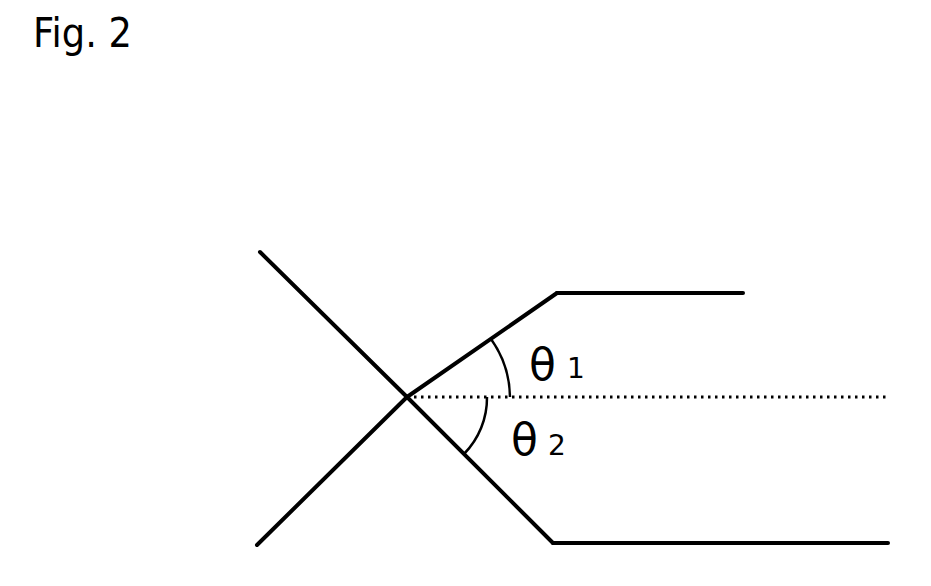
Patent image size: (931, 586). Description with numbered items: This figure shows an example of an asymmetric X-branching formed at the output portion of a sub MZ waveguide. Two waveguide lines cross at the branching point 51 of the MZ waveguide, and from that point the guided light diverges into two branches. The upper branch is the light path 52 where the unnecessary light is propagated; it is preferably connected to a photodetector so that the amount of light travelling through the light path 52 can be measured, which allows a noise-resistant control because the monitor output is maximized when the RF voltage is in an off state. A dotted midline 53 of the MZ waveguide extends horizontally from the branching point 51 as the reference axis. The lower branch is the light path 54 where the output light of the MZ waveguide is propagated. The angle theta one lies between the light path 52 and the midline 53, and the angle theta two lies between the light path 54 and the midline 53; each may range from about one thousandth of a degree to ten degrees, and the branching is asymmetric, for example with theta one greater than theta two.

The branching point 51 is at (409, 391).
The light path where the unnecessary light is propagated 52 is at (655, 293).
The midline of the MZ waveguide 53 is at (708, 398).
The light path where an output light of the MZ waveguide is propagated 54 is at (735, 542).